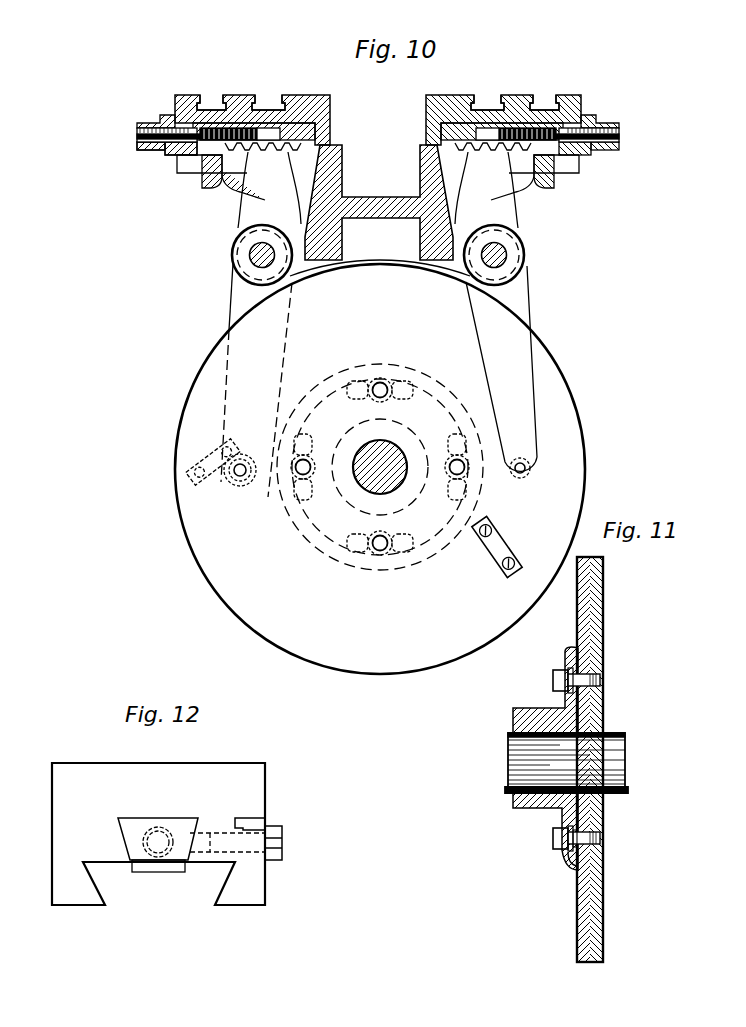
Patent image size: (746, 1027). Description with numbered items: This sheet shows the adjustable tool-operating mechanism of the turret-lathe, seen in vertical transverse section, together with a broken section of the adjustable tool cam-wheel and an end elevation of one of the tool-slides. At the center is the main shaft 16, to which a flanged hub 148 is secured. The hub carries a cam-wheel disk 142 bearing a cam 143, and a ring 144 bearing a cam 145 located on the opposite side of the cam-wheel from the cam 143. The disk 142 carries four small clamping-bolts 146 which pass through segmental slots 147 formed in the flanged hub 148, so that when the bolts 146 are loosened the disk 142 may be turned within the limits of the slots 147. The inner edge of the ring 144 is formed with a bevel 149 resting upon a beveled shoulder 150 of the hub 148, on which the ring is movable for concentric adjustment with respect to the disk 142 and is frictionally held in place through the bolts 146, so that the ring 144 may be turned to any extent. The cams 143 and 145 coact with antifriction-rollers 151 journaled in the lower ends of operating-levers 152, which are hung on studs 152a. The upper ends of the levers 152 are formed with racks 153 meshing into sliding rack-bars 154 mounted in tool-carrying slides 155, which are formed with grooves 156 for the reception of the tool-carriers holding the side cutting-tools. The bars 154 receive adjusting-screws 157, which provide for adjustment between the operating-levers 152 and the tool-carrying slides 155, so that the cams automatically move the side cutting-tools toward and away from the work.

In FIG. 10, the main shaft 16 is at (380, 455).
In FIG. 11, the main shaft 16 is at (610, 758).
In FIG. 10, the cam-wheel disk 142 is at (380, 467).
In FIG. 11, the cam-wheel disk 142 is at (604, 628).
In FIG. 10, the cam 143 is at (503, 547).
In FIG. 11, the ring 144 is at (578, 913).
In FIG. 10, the cam 145 is at (213, 455).
In FIG. 10, the clamping-bolts 146 is at (382, 383).
In FIG. 11, the clamping-bolts 146 is at (600, 681).
In FIG. 10, the segmental slots 147 is at (457, 452).
In FIG. 11, the segmental slots 147 is at (596, 668).
In FIG. 11, the flanged hub 148 is at (541, 758).
In FIG. 11, the bevel 149 is at (563, 856).
In FIG. 11, the beveled shoulder 150 is at (590, 858).
In FIG. 10, the antifriction-rollers 151 is at (240, 480).
In FIG. 10, the operating-levers 152 is at (230, 322).
In FIG. 10, the studs 152a is at (560, 245).
In FIG. 10, the racks 153 is at (378, 157).
In FIG. 10, the sliding rack-bars 154 is at (330, 135).
In FIG. 12, the sliding rack-bars 154 is at (185, 832).
In FIG. 10, the tool-carrying slides 155 is at (330, 105).
In FIG. 12, the tool-carrying slides 155 is at (158, 834).
In FIG. 10, the grooves 156 is at (218, 104).
In FIG. 10, the adjusting-screws 157 is at (160, 153).